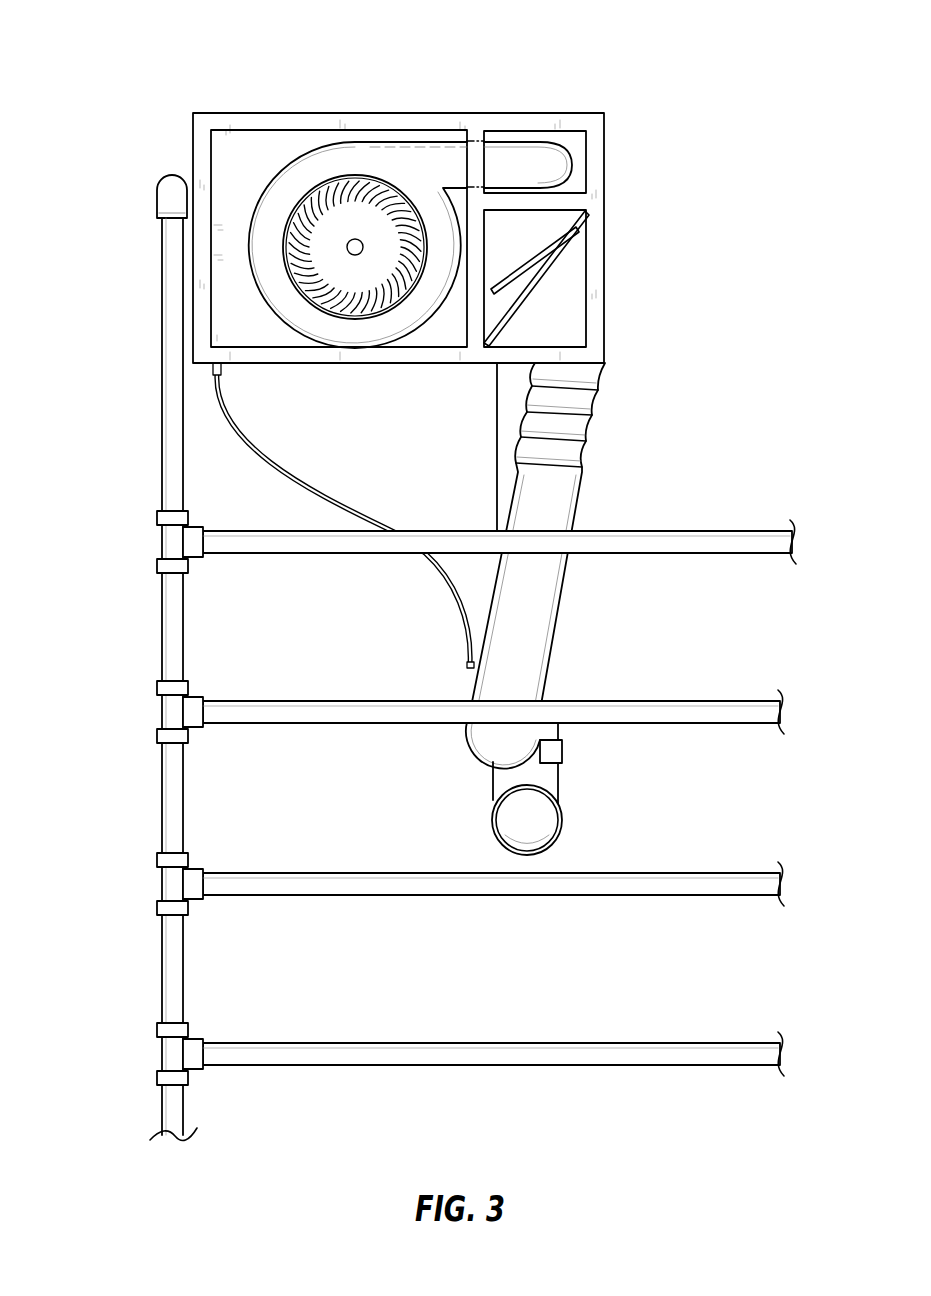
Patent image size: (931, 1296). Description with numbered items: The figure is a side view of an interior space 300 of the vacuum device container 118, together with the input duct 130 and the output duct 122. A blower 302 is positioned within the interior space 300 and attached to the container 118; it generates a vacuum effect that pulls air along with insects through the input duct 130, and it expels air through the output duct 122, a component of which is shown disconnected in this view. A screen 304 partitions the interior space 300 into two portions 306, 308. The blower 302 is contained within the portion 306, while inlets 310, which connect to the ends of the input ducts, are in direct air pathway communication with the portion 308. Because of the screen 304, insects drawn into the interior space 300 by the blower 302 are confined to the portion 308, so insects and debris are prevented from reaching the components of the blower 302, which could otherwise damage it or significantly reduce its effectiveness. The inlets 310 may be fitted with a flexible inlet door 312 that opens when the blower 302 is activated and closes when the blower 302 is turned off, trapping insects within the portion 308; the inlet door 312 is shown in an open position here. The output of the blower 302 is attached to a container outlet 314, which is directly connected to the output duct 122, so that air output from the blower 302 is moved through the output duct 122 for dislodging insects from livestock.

The vacuum device container 118 is at (314, 113).
The output duct 122 is at (495, 788).
The input duct 130 is at (470, 684).
The interior space 300 is at (258, 150).
The blower 302 is at (265, 186).
The screen 304 is at (483, 236).
The portion 306 is at (243, 316).
The portion 308 is at (545, 302).
The inlets 310 is at (572, 240).
The inlet door 312 is at (523, 263).
The container outlet 314 is at (467, 167).